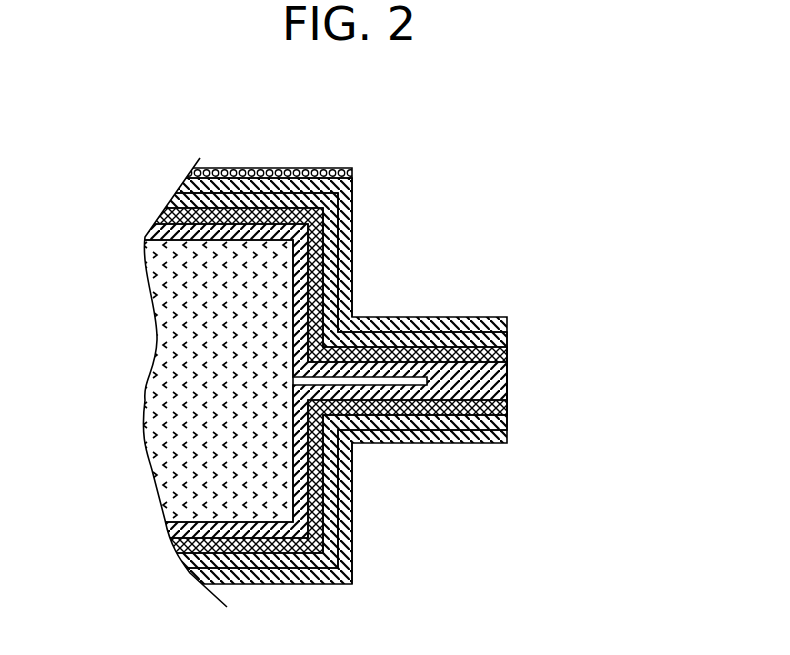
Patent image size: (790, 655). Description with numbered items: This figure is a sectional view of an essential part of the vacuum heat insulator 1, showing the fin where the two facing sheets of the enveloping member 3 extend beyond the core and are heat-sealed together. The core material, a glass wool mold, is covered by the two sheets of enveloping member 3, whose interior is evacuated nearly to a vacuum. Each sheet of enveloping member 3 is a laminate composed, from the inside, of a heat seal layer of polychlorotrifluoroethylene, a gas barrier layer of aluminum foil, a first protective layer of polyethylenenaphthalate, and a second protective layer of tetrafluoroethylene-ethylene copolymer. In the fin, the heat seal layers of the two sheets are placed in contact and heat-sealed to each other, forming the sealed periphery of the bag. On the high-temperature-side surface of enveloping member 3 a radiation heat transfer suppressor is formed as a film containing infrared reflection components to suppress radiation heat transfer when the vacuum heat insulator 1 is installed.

The vacuum heat insulator 1 is at (238, 153).
The enveloping member 3 is at (352, 258).